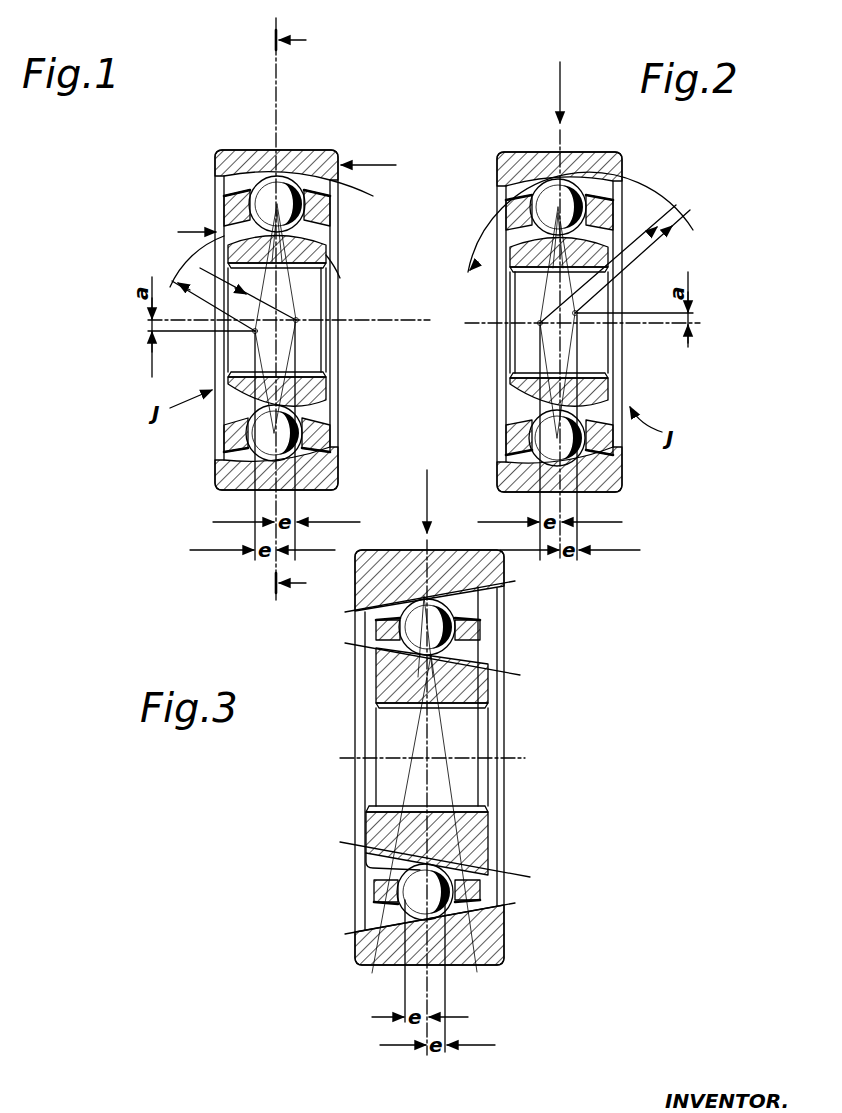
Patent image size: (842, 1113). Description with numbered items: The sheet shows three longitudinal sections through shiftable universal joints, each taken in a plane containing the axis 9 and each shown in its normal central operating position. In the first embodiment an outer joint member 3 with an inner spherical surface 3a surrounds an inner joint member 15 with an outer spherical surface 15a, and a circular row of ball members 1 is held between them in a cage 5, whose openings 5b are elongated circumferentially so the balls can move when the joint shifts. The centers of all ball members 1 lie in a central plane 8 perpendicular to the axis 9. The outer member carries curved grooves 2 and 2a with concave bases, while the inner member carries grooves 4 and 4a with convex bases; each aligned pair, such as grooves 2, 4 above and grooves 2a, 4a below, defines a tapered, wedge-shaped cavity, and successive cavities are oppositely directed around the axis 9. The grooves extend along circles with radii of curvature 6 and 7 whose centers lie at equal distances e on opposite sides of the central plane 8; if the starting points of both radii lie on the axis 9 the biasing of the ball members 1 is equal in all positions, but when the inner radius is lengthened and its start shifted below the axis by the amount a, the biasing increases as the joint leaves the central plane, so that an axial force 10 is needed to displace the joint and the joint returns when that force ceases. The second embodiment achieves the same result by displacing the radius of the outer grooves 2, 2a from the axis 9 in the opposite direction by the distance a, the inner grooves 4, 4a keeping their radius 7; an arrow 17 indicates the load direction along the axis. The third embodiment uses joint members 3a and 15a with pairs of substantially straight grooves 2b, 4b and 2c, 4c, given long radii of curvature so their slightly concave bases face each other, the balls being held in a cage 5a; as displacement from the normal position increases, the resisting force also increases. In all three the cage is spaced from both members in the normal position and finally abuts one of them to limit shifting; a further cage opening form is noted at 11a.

In FIG. 1, the ball member 1 is at (263, 188).
In FIG. 2, the ball member 1 is at (578, 190).
In FIG. 3, the ball member 1 is at (410, 625).
In FIG. 1, the groove 2 is at (326, 150).
In FIG. 2, the groove 2 is at (607, 192).
In FIG. 1, the groove 2a is at (226, 454).
In FIG. 2, the groove 2a is at (504, 454).
In FIG. 3, the groove 2b is at (490, 601).
In FIG. 3, the groove 2c is at (368, 916).
In FIG. 1, the outer joint member 3 is at (220, 150).
In FIG. 2, the outer joint member 3 is at (518, 152).
In FIG. 1, the inner spherical surface 3a is at (226, 432).
In FIG. 3, the inner spherical surface 3a is at (370, 572).
In FIG. 1, the groove 4 is at (312, 238).
In FIG. 2, the groove 4 is at (602, 243).
In FIG. 1, the groove 4a is at (314, 413).
In FIG. 2, the groove 4a is at (516, 402).
In FIG. 3, the groove 4b is at (478, 655).
In FIG. 3, the groove 4c is at (378, 856).
In FIG. 1, the cage 5 is at (226, 213).
In FIG. 2, the cage 5 is at (612, 438).
In FIG. 3, the cage 5a is at (481, 893).
In FIG. 1, the cage opening 5b is at (240, 195).
In FIG. 2, the cage opening 5b is at (502, 209).
In FIG. 1, the radius of curvature 6 is at (372, 199).
In FIG. 2, the radius of curvature 6 is at (580, 247).
In FIG. 1, the radius of curvature 7 is at (234, 299).
In FIG. 1, the central plane 8 is at (288, 72).
In FIG. 1, the axis 9 is at (289, 323).
In FIG. 2, the axis 9 is at (637, 330).
In FIG. 1, the axial force 10 is at (286, 199).
In FIG. 1, the radial plane 11a is at (308, 312).
In FIG. 1, the inner joint member 15 is at (246, 256).
In FIG. 1, the outer spherical surface 15a is at (330, 440).
In FIG. 3, the outer spherical surface 15a is at (378, 680).
In FIG. 2, the load direction 17 is at (577, 311).
In FIG. 3, the load direction 17 is at (444, 762).